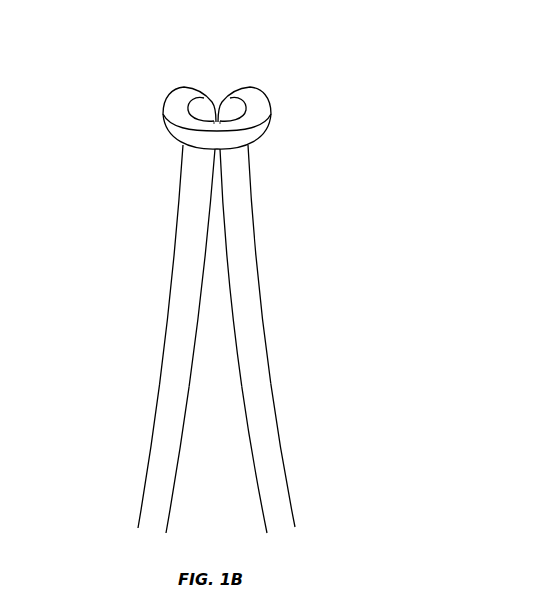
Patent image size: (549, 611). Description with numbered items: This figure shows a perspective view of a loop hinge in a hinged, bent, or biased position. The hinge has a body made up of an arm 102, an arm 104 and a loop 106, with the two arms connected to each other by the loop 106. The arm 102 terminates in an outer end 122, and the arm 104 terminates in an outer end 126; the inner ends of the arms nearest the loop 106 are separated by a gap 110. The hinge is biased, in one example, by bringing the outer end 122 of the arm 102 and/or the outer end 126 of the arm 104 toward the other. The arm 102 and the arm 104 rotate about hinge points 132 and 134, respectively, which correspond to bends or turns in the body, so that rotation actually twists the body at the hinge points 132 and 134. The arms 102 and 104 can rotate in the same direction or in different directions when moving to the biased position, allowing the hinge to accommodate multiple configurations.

The arm 102 is at (179, 300).
The arm 104 is at (250, 295).
The loop 106 is at (163, 85).
The gap 110 is at (226, 87).
The outer end 122 is at (168, 438).
The outer end 126 is at (272, 453).
The hinge point 132 is at (184, 87).
The hinge point 134 is at (250, 87).